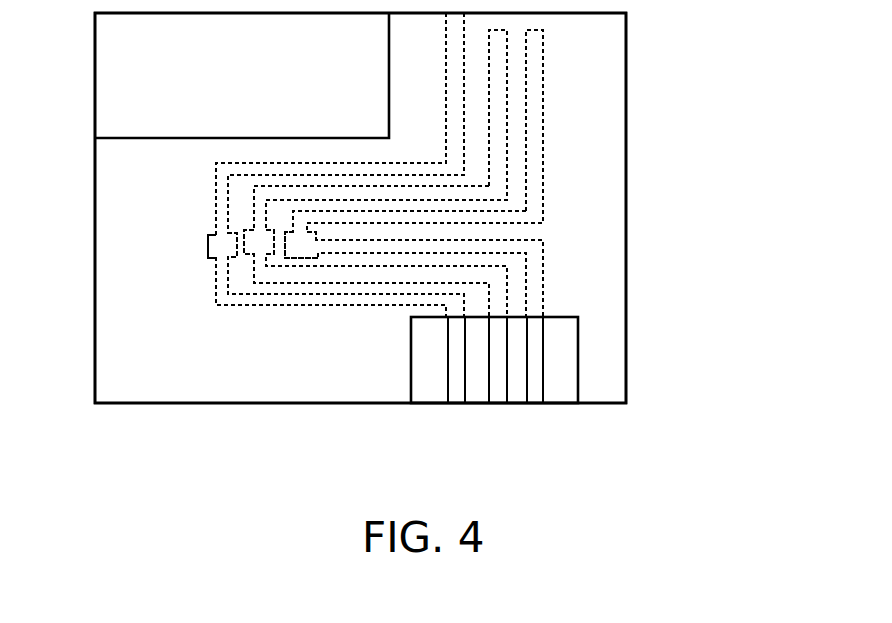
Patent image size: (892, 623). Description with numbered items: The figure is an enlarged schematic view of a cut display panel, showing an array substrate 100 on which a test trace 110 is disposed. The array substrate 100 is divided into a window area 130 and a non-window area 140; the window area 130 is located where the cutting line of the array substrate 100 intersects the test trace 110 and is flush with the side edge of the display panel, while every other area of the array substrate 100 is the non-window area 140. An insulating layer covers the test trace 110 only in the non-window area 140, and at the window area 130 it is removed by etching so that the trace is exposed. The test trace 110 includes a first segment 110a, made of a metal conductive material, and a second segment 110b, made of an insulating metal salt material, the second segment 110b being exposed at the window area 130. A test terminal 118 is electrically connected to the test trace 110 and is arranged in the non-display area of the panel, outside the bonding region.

The array substrate 100 is at (592, 52).
The non-window area 140 is at (585, 241).
The window area 130 is at (578, 369).
The test trace 110 is at (365, 255).
The first segment 110a is at (536, 385).
The second segment 110b is at (540, 88).
The test terminal 118 is at (211, 236).